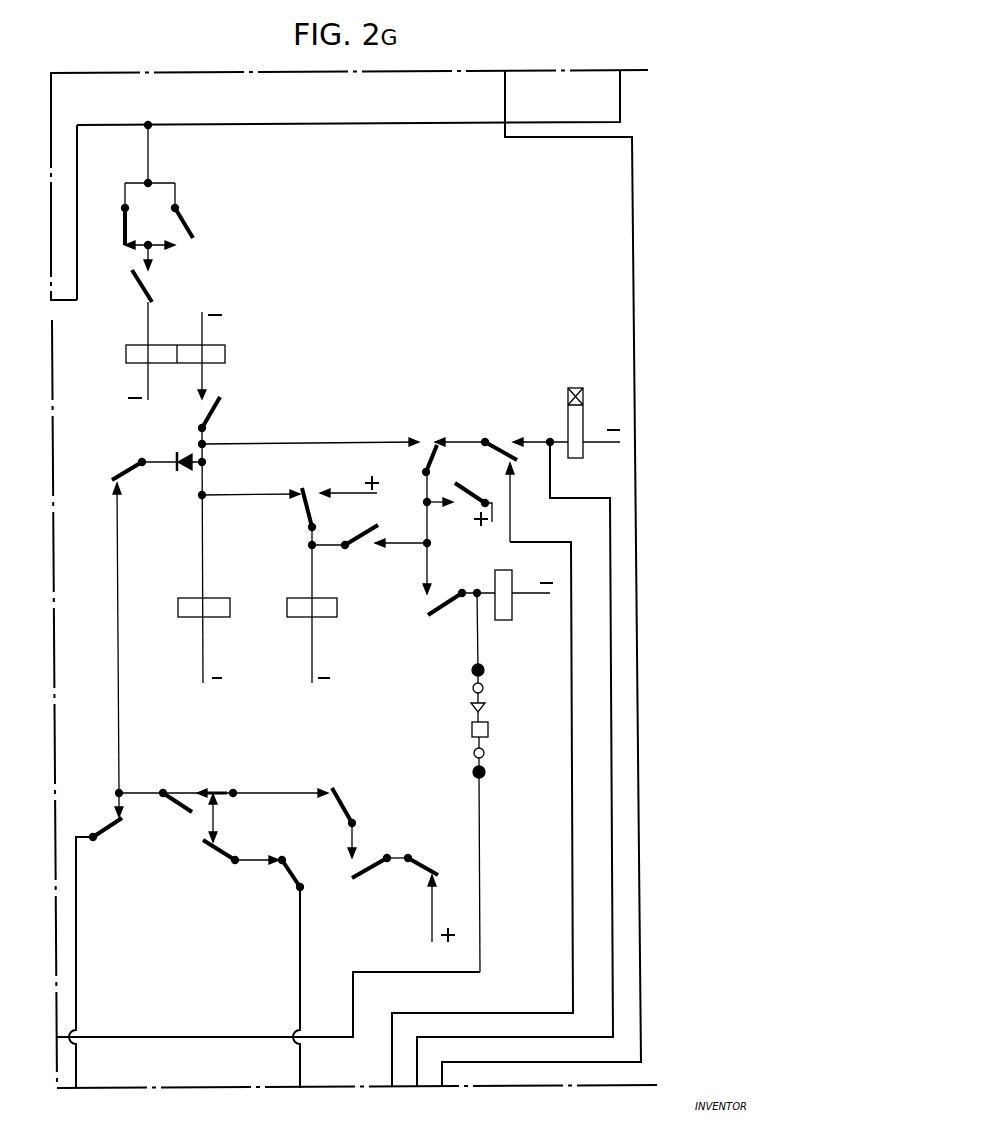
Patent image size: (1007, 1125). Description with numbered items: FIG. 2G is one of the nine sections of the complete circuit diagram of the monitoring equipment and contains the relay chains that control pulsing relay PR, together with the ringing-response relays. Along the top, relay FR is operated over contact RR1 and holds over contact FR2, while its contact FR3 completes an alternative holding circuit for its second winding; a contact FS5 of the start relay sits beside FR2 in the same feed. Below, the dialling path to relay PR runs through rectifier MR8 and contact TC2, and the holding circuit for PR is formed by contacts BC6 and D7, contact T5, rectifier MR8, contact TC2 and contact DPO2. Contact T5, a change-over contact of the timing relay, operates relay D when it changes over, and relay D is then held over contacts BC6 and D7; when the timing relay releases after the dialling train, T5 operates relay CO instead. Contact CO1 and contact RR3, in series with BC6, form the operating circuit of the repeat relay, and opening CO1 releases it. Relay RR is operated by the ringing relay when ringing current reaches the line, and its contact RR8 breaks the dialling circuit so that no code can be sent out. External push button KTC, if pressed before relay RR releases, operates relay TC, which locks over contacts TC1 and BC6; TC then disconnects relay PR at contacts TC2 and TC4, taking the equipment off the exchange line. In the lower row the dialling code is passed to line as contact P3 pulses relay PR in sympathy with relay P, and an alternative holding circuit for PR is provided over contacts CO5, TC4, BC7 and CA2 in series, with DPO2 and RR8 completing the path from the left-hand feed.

The contact of relay FS FS5 is at (120, 222).
The contact FR2 is at (190, 217).
The contact RR1 is at (152, 283).
The relay FR is at (225, 353).
The contact FR3 is at (214, 413).
The rectifier MR8 is at (180, 460).
The contact TC2 is at (128, 473).
The contact T5 is at (309, 493).
The contact D7 is at (368, 537).
The contact CO1 is at (424, 436).
The contact BC6 is at (470, 493).
The contact RR3 is at (503, 440).
The relay RR is at (596, 422).
The relay CO is at (218, 605).
The relay D is at (322, 605).
The contact TC1 is at (428, 597).
The relay TC is at (512, 613).
The external push button KTC is at (489, 730).
The contact CO5 is at (195, 784).
The contact TC4 is at (358, 790).
The contact DPO2 is at (112, 833).
The contact P3 is at (217, 857).
The contact RR8 is at (299, 872).
The contact BC7 is at (365, 868).
The contact CA2 is at (440, 857).